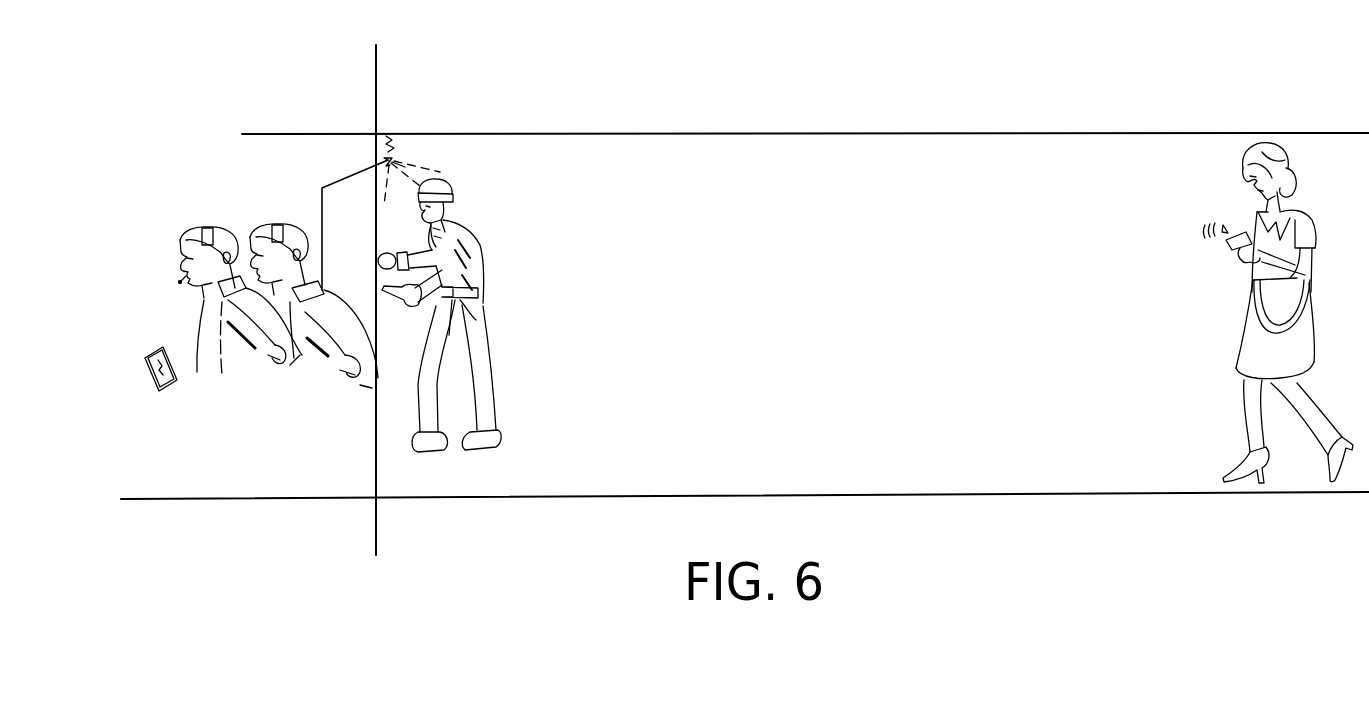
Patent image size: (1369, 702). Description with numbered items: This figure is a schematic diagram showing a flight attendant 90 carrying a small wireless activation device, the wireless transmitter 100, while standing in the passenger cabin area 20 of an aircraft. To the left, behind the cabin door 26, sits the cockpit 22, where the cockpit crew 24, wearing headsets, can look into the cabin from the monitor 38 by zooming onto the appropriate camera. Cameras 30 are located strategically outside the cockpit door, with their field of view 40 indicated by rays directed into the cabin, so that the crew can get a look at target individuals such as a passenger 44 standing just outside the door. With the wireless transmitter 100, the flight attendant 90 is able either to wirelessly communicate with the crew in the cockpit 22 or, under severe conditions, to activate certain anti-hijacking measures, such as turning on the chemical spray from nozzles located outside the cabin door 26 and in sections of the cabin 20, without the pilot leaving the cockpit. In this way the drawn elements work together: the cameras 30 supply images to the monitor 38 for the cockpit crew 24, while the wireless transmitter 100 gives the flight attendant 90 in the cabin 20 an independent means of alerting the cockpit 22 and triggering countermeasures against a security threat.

The passenger cabin area 20 is at (801, 104).
The cockpit 22 is at (226, 105).
The cockpit crew 24 is at (215, 226).
The cabin door 26 is at (357, 170).
The cameras 30 is at (384, 135).
The monitor 38 is at (166, 386).
The emitter / transmitter 40 is at (406, 165).
The patron / customer 44 is at (468, 238).
The waitress / server 90 is at (1275, 147).
The wireless transmitter 100 is at (1232, 242).